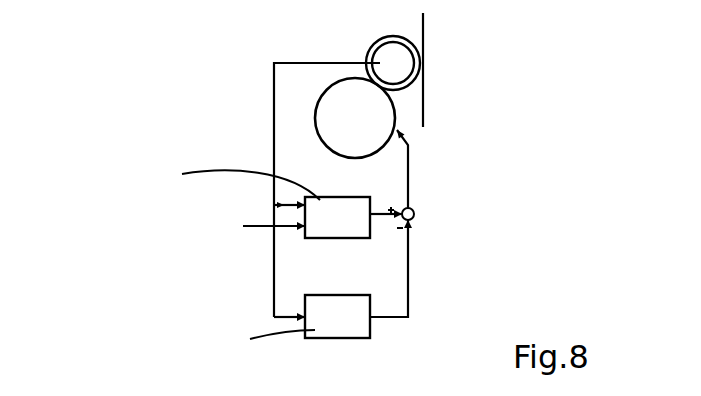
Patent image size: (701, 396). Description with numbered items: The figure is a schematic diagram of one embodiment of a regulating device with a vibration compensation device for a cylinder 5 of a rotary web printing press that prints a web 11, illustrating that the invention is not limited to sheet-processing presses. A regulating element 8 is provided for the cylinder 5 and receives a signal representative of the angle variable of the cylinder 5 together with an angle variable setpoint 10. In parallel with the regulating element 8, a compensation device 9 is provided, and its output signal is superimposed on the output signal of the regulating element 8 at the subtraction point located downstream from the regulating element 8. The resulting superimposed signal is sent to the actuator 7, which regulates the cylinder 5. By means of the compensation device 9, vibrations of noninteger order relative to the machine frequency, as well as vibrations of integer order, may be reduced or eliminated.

The cylinder 5 is at (393, 63).
The actuator 7 is at (355, 118).
The regulating element 8 is at (201, 202).
The compensation device 9 is at (216, 338).
The angle variable setpoint 10 is at (263, 235).
The web of printing material 11 is at (438, 70).